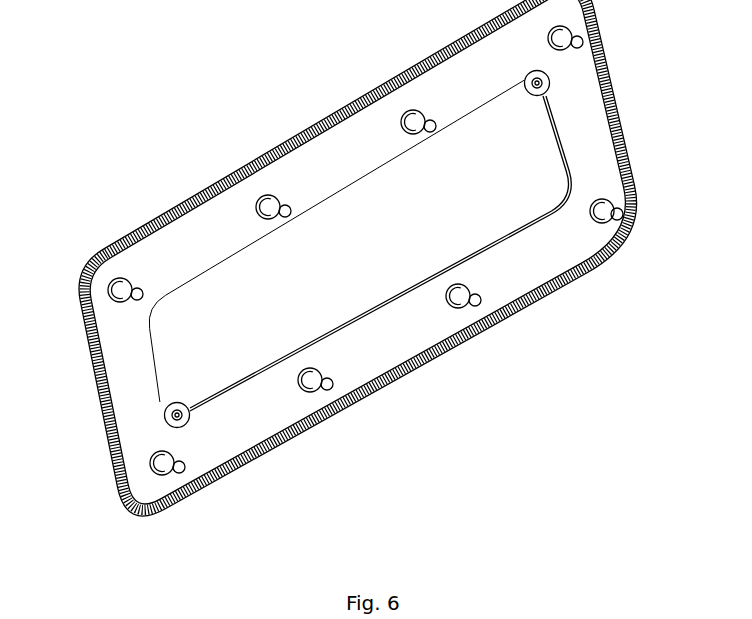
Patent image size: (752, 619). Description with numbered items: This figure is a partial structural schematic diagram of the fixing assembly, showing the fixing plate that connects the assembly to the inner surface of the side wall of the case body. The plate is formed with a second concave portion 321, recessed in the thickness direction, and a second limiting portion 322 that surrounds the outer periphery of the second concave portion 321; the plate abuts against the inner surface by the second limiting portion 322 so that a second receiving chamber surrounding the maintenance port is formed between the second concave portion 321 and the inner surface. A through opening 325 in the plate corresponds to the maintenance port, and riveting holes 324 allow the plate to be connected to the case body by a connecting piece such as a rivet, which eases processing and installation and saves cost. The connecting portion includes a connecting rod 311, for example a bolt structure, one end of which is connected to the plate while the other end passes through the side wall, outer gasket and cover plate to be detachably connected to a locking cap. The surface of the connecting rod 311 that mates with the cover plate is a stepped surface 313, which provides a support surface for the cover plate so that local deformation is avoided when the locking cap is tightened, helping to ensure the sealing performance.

The second concave portion 321 is at (178, 224).
The second limiting portion 322 is at (312, 138).
The riveting hole 324 is at (551, 84).
The through opening 325 is at (170, 336).
The connecting rod 311 is at (333, 387).
The stepped surface 313 is at (311, 392).